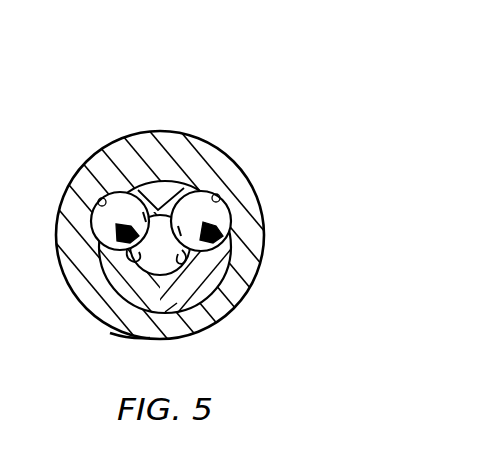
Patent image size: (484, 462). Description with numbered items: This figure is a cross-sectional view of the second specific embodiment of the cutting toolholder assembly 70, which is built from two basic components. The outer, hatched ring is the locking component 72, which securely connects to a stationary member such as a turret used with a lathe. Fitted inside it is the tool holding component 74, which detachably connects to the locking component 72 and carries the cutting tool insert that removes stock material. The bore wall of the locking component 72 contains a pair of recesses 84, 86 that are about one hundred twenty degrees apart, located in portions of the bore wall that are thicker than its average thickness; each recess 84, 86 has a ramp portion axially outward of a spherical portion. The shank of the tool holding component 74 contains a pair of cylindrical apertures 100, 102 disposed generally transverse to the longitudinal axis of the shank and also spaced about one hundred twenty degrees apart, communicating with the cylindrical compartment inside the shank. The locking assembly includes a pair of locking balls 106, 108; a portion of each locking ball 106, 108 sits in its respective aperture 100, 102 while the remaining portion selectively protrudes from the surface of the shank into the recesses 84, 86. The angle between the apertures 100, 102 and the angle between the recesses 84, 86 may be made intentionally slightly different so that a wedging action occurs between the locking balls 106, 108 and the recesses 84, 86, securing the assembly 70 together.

The cutting toolholder assembly 70 is at (207, 113).
The locking component 72 is at (138, 131).
The tool holding component 74 is at (150, 305).
The recess 84 is at (105, 200).
The recess 86 is at (221, 201).
The cylindrical aperture 100 is at (137, 258).
The cylindrical aperture 102 is at (187, 328).
The locking ball 106 is at (103, 213).
The locking ball 108 is at (229, 212).